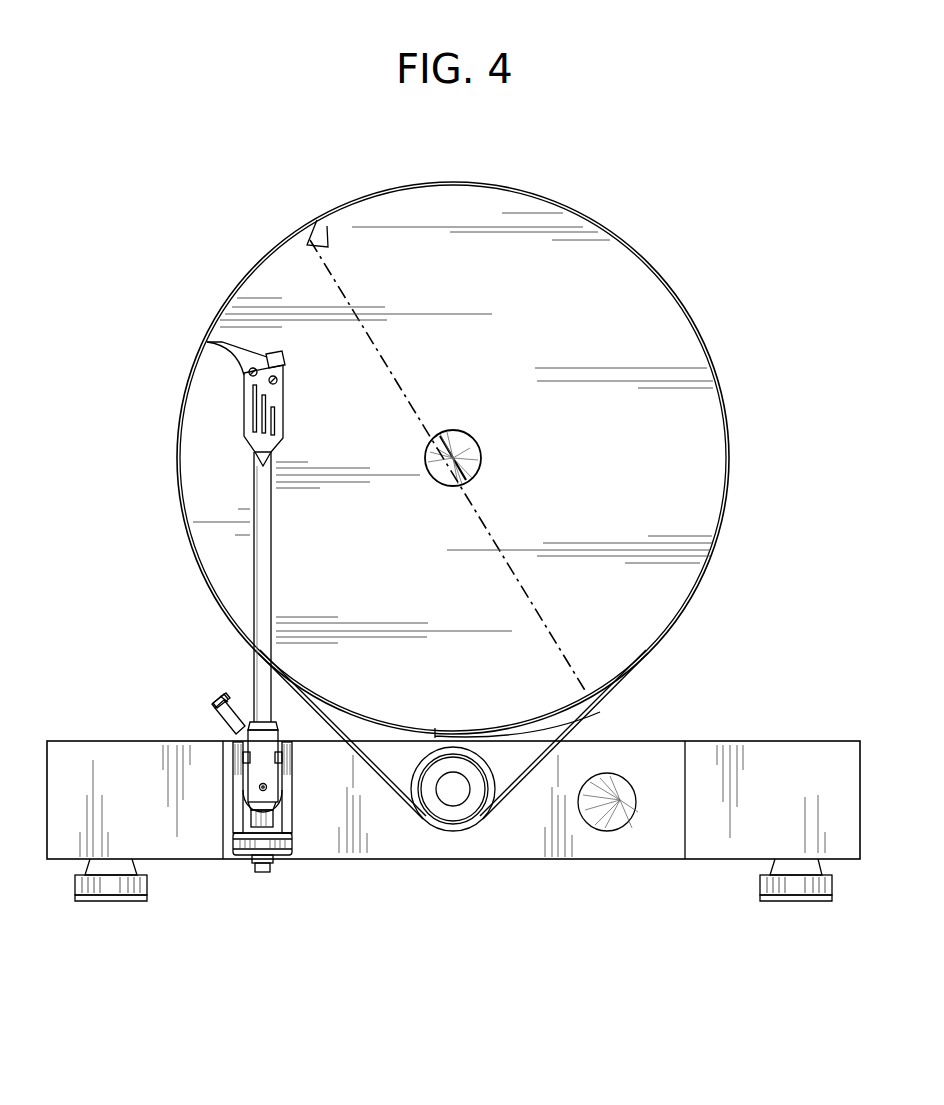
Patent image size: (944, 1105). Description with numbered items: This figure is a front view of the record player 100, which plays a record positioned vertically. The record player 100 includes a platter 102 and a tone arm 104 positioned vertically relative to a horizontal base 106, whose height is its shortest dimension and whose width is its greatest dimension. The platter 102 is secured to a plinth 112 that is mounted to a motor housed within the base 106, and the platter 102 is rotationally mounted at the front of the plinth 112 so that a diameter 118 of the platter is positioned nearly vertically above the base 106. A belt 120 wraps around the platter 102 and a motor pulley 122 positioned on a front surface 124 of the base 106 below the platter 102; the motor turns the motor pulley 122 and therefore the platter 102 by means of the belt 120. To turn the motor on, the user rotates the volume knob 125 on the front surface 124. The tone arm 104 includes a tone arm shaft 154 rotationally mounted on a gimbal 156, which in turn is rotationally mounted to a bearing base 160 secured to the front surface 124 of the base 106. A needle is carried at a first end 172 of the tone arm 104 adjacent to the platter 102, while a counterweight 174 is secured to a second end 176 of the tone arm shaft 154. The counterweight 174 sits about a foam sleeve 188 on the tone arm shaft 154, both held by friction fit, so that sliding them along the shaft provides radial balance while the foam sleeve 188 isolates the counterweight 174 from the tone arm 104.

The record player 100 is at (603, 153).
The platter 102 is at (612, 474).
The tone arm 104 is at (248, 650).
The base 106 is at (655, 843).
The plinth 112 is at (563, 720).
The diameter 118 is at (308, 245).
The belt 120 is at (600, 690).
The motor pulley 122 is at (452, 795).
The front surface 124 is at (504, 843).
The volume knob 125 is at (601, 810).
The tone arm shaft 154 is at (262, 594).
The gimbal 156 is at (287, 788).
The bearing base 160 is at (226, 817).
The first end 172 is at (250, 392).
The counterweight 174 is at (243, 843).
The second end 176 is at (262, 872).
The foam sleeve 188 is at (215, 706).